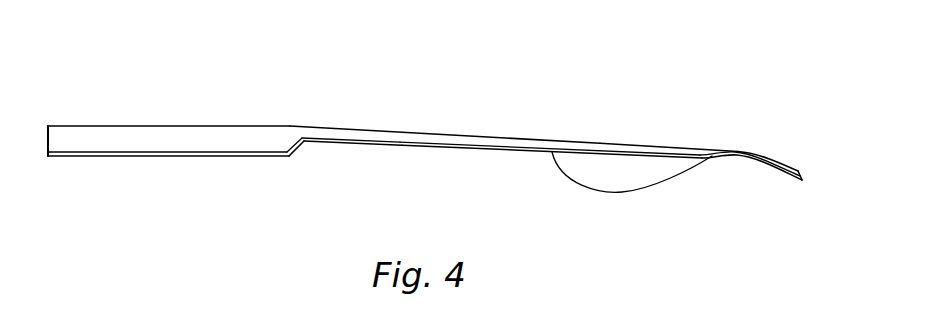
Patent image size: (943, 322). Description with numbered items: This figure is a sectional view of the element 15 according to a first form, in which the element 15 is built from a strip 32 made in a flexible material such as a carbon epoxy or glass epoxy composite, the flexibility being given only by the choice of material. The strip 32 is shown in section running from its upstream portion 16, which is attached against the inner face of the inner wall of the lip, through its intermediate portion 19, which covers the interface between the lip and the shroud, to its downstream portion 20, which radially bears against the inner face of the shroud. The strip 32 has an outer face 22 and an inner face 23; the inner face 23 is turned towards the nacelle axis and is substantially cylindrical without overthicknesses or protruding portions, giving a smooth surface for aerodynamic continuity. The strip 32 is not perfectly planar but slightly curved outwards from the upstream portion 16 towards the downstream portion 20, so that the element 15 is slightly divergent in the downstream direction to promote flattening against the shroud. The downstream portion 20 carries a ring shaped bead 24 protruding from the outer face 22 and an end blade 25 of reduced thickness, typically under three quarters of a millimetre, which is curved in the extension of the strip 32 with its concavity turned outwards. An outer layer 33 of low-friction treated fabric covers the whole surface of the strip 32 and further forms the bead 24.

The upstream portion 16 is at (150, 143).
The outer layer 33 is at (263, 155).
The intermediate portion 19 is at (477, 142).
The downstream portion 20 is at (686, 136).
The inner face 23 is at (375, 130).
The outer face 22 is at (360, 146).
The ring shaped bead 24 is at (633, 170).
The end blade 25 is at (770, 160).
The strip 32 is at (769, 43).
The element 15 is at (718, 66).